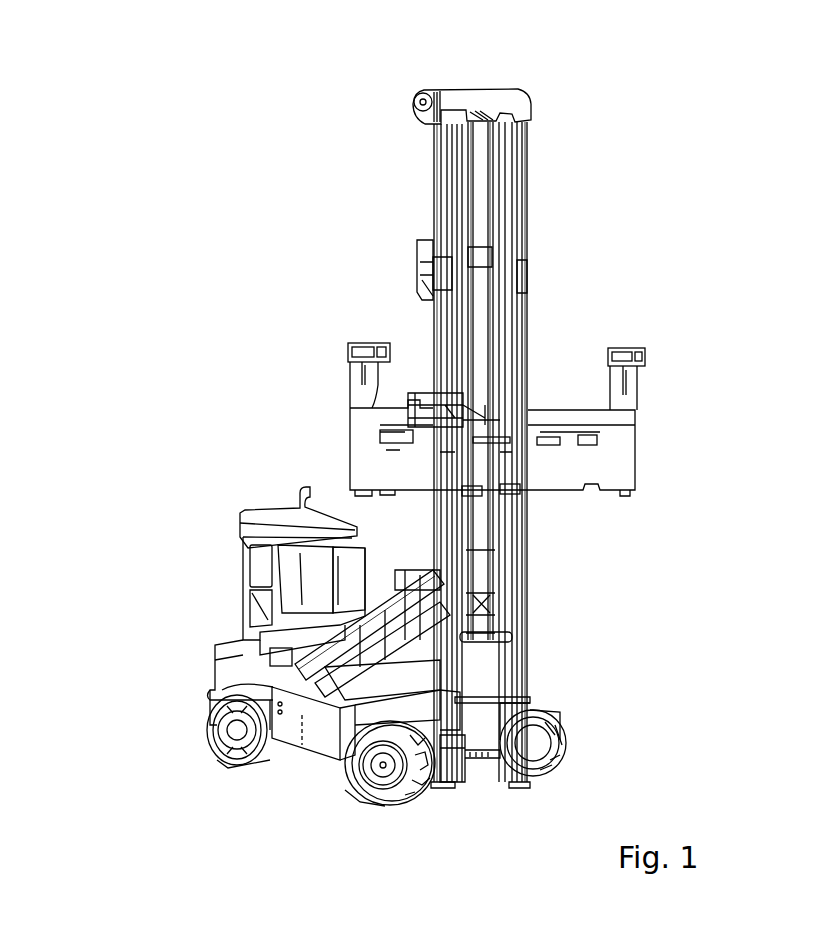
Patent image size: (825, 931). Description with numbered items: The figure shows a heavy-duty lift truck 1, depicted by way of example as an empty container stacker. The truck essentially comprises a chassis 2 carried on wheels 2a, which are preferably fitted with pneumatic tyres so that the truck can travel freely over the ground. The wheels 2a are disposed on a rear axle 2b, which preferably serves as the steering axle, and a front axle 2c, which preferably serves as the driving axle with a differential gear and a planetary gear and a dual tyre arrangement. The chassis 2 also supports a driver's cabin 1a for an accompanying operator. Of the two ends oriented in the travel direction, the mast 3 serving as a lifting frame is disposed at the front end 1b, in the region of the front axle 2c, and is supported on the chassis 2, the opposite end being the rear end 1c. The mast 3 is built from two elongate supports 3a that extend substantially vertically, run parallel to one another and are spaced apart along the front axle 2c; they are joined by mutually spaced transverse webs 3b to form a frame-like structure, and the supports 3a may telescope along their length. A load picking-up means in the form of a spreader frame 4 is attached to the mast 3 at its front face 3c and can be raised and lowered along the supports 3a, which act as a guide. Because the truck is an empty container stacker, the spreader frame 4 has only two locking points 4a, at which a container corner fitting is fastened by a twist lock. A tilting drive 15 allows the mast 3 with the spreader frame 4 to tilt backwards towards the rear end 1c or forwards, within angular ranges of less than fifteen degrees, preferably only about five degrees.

The heavy-duty lift truck 1 is at (343, 253).
The driver's cabin 1a is at (240, 563).
The front end 1b is at (592, 760).
The rear end 1c is at (222, 636).
The chassis 2 is at (326, 745).
The wheels 2a is at (207, 734).
The rear axle 2b is at (232, 769).
The front axle 2c is at (365, 800).
The mast 3 is at (563, 587).
The supports 3a is at (423, 187).
The transverse webs 3b is at (503, 92).
The front face 3c is at (563, 325).
The spreader frame 4 is at (603, 490).
The locking points 4a is at (362, 352).
The tilting drive 15 is at (421, 592).